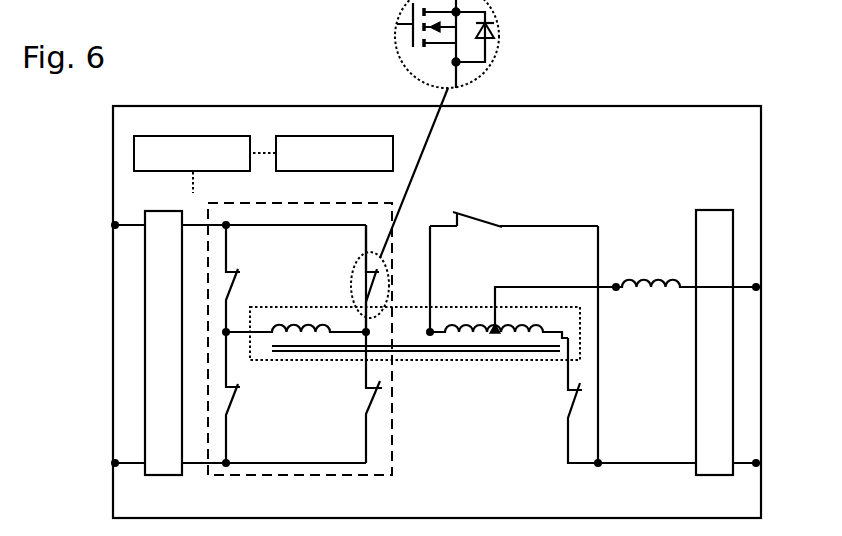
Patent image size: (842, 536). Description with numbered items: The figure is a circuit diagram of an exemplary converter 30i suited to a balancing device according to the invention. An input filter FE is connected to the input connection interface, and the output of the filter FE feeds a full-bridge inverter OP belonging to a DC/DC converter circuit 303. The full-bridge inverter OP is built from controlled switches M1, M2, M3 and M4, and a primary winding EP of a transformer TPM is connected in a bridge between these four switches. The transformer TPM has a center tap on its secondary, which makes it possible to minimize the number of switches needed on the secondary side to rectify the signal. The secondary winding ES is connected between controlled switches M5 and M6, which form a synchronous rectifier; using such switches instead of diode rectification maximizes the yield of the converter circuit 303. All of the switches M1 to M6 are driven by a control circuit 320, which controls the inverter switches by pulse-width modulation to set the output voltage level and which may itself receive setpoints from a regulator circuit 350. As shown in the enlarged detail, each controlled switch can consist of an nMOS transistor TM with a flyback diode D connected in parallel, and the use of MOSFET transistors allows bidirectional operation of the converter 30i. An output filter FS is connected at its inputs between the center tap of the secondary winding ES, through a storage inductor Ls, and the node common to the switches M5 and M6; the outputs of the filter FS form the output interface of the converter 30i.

The converter 30i is at (761, 312).
The DC/DC converter circuit 303 is at (565, 196).
The control circuit 320 is at (176, 168).
The regulator circuit 350 is at (318, 168).
The input filter FE is at (148, 350).
The output filter FS is at (699, 350).
The full-bridge inverter OP is at (300, 476).
The controlled switch M1 is at (238, 268).
The controlled switch M2 is at (240, 385).
The controlled switch M3 is at (363, 302).
The controlled switch M4 is at (372, 395).
The controlled switch M5 is at (455, 214).
The controlled switch M6 is at (572, 389).
The transformer TPM is at (413, 362).
The primary winding EP is at (293, 322).
The secondary winding ES is at (462, 308).
The storage inductor Ls is at (644, 275).
The transistor TM is at (405, 22).
The flyback diode D is at (490, 33).